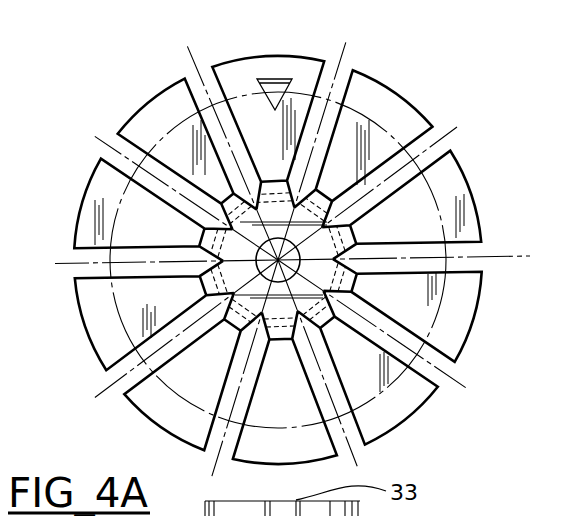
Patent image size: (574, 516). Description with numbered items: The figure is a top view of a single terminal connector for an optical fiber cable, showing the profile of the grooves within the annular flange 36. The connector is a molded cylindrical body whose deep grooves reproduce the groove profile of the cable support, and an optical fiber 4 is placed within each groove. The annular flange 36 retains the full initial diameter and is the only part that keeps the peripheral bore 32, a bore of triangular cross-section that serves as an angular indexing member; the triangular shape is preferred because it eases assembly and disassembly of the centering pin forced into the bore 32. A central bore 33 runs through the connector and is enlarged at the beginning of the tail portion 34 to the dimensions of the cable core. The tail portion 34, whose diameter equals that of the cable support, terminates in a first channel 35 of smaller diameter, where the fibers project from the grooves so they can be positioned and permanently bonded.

The optical fiber 4 is at (264, 314).
The peripheral bore 32 is at (258, 78).
The central bore 33 is at (415, 365).
The tail portion 34 is at (236, 322).
The first channel 35 is at (331, 328).
The annular flange 36 is at (450, 184).